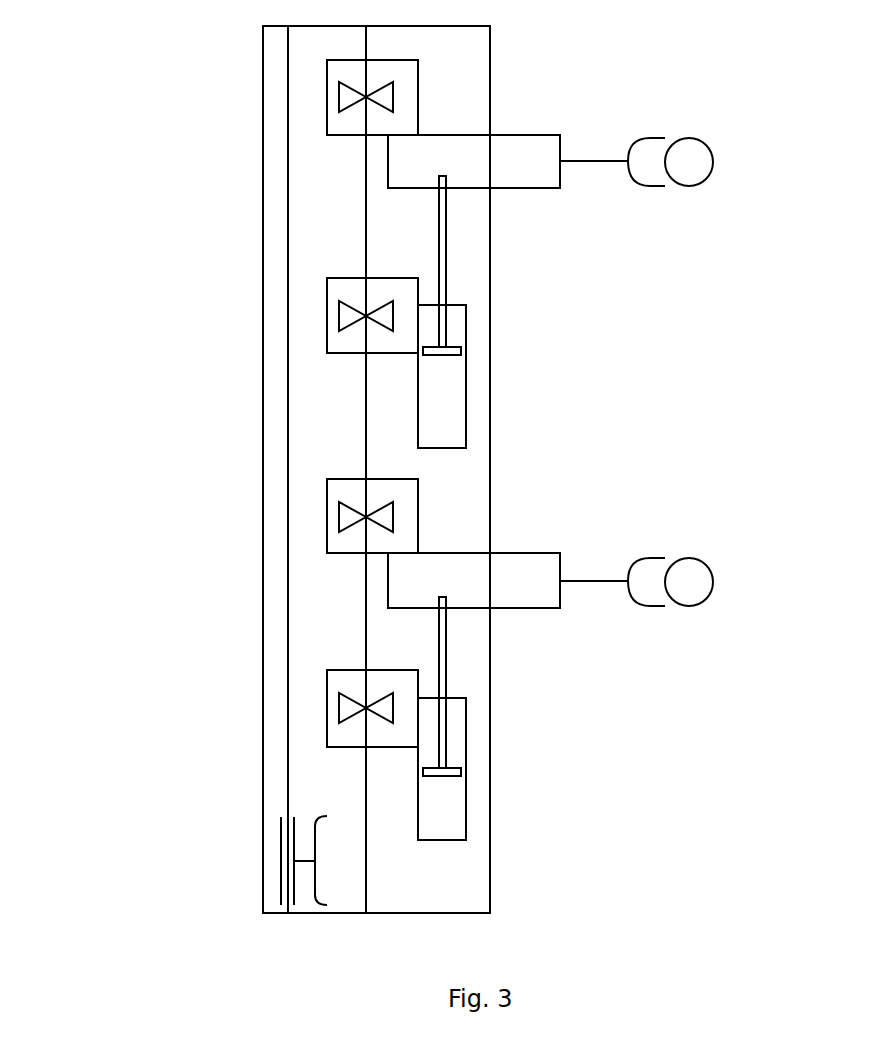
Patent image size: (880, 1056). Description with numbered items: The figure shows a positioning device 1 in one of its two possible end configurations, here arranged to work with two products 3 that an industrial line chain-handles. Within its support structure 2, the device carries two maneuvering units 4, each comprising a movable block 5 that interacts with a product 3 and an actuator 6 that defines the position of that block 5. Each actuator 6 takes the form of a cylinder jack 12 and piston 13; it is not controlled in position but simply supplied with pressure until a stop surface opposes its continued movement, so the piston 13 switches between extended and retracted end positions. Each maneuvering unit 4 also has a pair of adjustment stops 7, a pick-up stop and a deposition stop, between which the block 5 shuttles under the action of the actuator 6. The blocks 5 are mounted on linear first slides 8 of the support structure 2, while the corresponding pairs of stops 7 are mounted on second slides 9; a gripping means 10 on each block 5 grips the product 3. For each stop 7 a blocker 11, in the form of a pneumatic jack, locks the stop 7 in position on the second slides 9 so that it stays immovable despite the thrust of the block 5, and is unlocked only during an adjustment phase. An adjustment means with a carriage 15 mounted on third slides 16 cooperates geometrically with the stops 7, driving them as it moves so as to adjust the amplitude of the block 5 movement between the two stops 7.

The positioning device 1 is at (117, 733).
The support structure 2 is at (256, 850).
The product 3 is at (690, 160).
The maneuvering unit 4 is at (643, 247).
The movable block 5 is at (527, 160).
The actuator 6 is at (472, 388).
The adjustment stop 7 is at (320, 100).
The first slides 8 is at (497, 883).
The second slides 9 is at (362, 887).
The gripping means 10 is at (665, 118).
The blocker 11 is at (353, 515).
The cylinder jack 12 is at (468, 715).
The piston 13 is at (452, 644).
The carriage 15 is at (283, 885).
The third slides 16 is at (286, 226).